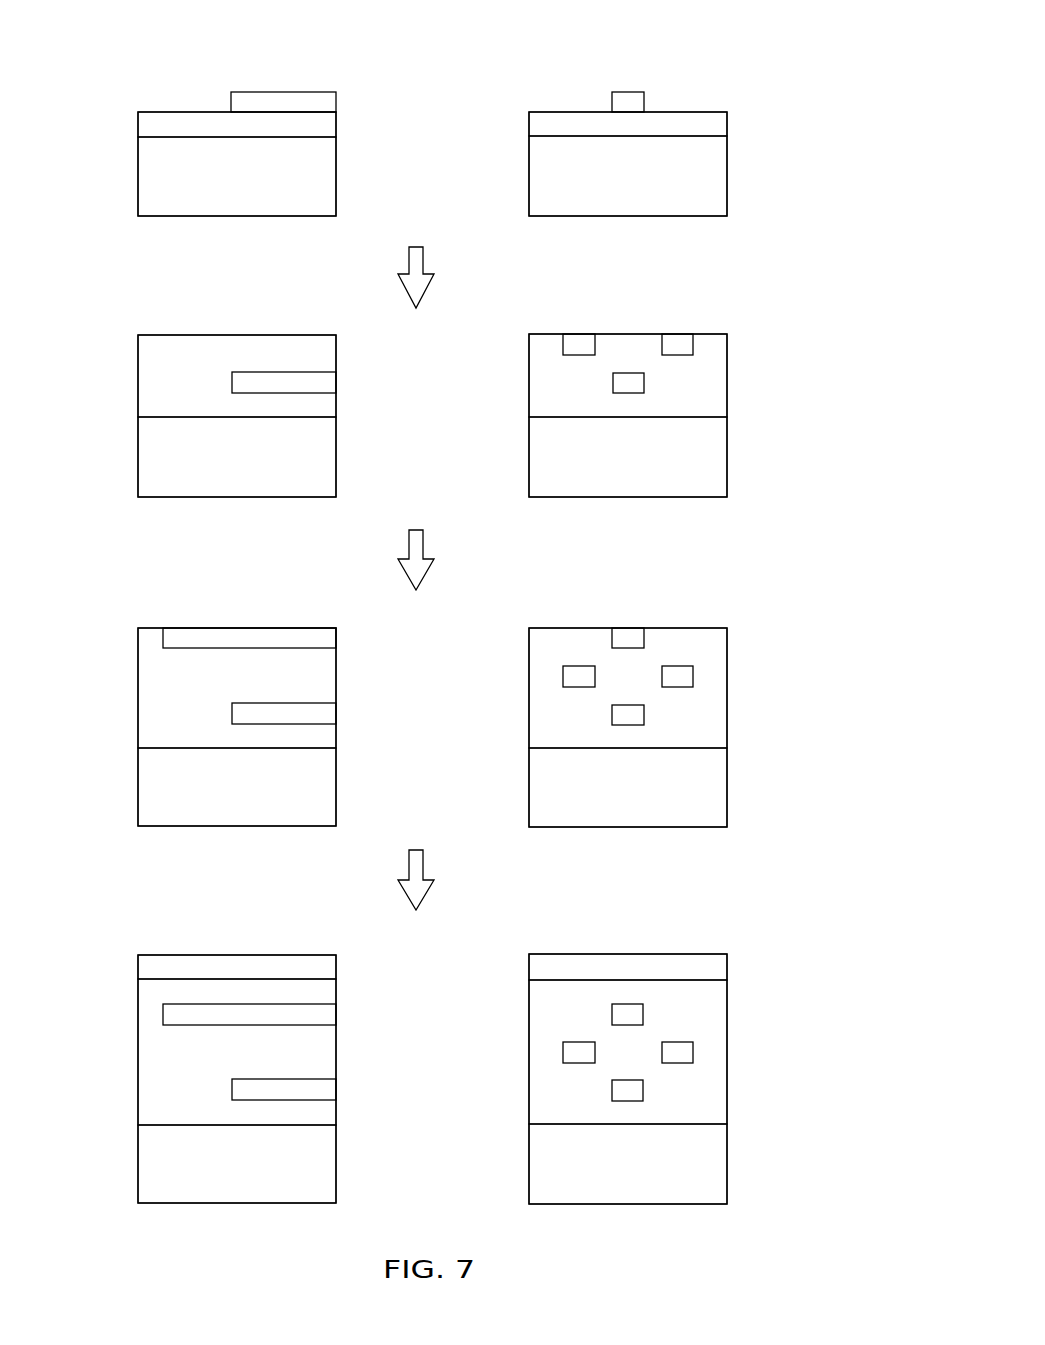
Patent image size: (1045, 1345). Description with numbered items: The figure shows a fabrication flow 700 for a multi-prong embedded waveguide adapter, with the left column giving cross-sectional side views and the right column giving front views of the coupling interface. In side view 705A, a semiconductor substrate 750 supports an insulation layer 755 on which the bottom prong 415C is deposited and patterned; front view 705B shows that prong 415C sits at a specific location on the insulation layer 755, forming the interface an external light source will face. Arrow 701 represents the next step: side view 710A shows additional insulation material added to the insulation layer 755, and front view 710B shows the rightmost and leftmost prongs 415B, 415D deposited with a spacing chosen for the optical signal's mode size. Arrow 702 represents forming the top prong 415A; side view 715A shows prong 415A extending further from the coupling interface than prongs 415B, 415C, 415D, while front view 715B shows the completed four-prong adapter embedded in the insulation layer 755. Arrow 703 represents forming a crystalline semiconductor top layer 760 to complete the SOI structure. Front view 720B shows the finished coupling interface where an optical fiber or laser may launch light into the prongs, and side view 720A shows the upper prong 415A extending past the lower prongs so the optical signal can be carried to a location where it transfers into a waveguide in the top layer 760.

The flow 700 is at (705, 38).
The arrow 701 is at (423, 253).
The arrow 702 is at (423, 540).
The arrow 703 is at (423, 857).
The side view 705A is at (124, 175).
The front view 705B is at (741, 180).
The side view 710A is at (124, 453).
The front view 710B is at (741, 460).
The side view 715A is at (124, 773).
The front view 715B is at (741, 780).
The side view 720A is at (124, 1150).
The front view 720B is at (741, 1155).
The semiconductor substrate 750 is at (336, 183).
The insulation layer 755 is at (336, 123).
The top layer 760 is at (336, 968).
The top prong 415A is at (336, 638).
The prong 415B is at (595, 343).
The prong 415C is at (336, 103).
The prong 415D is at (693, 343).